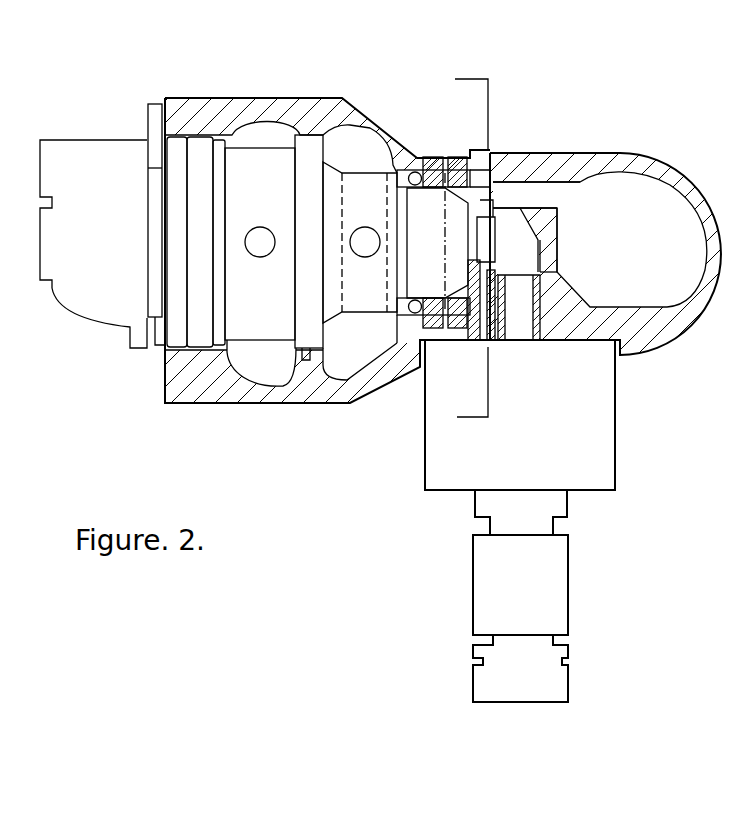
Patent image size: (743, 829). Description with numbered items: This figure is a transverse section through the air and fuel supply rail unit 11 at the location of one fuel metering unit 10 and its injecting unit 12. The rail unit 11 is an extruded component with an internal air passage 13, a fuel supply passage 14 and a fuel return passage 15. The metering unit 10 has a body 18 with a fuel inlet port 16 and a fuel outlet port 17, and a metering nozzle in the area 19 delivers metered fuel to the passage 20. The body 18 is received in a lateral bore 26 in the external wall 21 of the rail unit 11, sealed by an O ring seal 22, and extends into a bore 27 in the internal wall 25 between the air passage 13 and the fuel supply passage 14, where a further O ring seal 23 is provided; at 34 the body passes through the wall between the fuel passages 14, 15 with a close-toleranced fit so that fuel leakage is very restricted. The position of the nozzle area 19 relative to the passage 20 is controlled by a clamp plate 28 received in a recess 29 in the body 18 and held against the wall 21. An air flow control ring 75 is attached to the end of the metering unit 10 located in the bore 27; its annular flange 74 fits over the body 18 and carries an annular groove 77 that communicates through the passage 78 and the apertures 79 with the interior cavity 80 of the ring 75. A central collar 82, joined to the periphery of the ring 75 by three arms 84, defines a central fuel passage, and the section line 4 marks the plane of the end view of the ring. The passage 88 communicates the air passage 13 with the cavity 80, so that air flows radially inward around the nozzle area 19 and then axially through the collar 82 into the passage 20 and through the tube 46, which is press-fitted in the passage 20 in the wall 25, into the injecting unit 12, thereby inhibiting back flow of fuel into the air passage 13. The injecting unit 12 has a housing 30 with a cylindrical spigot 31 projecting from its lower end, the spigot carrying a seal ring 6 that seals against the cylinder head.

The section line 4 is at (487, 79).
The seal ring 6 is at (472, 653).
The fuel metering unit 10 is at (98, 322).
The air and fuel supply rail unit 11 is at (651, 150).
The injecting unit 12 is at (594, 493).
The air passage 13 is at (678, 289).
The fuel supply passage 14 is at (350, 367).
The fuel return passage 15 is at (258, 362).
The fuel inlet port 16 is at (365, 228).
The fuel outlet port 17 is at (260, 224).
The body 18 is at (306, 163).
The nozzle area 19 is at (466, 245).
The passage 20 is at (492, 237).
The external wall 21 is at (131, 430).
The O ring seal 22 is at (201, 160).
The O ring seal 23 is at (415, 172).
The internal wall 25 is at (507, 152).
The lateral bore 26 is at (183, 125).
The bore 27 is at (412, 328).
The clamp plate 28 is at (143, 105).
The recess 29 is at (157, 324).
The housing 30 is at (624, 436).
The cylindrical spigot 31 is at (472, 572).
The close-toleranced fit 34 is at (310, 357).
The tube 46 is at (546, 292).
The annular flange 74 is at (433, 157).
The air flow control ring 75 is at (510, 271).
The annular groove 77 is at (462, 167).
The passage 78 is at (466, 346).
The apertures 79 is at (462, 314).
The interior cavity 80 is at (473, 186).
The collar 82 is at (493, 193).
The arms 84 is at (480, 290).
The passage 88 is at (552, 192).